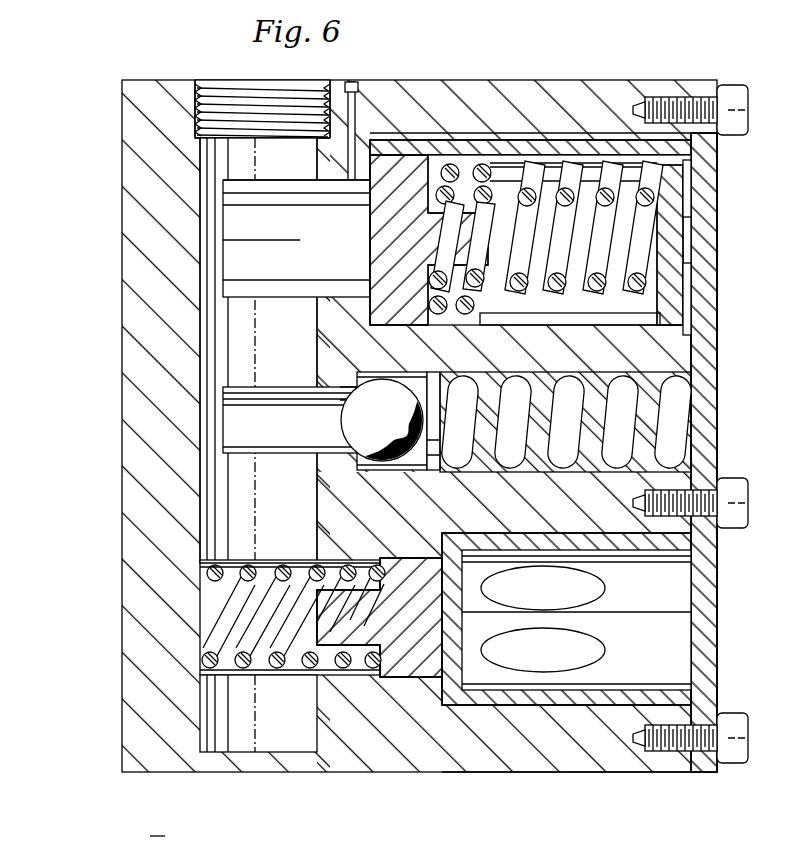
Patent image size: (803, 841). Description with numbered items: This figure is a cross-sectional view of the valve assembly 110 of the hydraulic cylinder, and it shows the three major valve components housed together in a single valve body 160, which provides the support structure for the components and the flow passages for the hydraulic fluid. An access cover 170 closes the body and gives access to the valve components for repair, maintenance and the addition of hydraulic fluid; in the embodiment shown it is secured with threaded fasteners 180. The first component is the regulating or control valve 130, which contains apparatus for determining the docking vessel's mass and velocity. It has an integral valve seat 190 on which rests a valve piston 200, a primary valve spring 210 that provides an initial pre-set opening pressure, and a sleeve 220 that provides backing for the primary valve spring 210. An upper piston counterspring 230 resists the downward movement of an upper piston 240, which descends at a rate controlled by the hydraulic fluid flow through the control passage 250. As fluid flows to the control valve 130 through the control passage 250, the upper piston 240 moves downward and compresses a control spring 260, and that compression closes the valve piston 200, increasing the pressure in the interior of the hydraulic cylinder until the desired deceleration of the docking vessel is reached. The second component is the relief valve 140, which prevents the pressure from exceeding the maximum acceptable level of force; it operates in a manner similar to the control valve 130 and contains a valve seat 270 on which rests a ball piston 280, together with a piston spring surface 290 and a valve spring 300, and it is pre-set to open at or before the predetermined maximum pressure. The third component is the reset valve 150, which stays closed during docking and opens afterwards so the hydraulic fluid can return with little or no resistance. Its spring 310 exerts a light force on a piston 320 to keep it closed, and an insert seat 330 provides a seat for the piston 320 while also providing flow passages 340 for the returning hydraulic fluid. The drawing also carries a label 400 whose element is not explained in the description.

The valve assembly 110 is at (470, 60).
The control valve 130 is at (221, 238).
The relief valve 140 is at (318, 420).
The reset valve 150 is at (262, 678).
The valve body 160 is at (582, 772).
The access cover 170 is at (700, 782).
The threaded fasteners 180 is at (700, 488).
The valve seat 190 is at (364, 183).
The valve piston 200 is at (370, 280).
The primary valve spring 210 is at (497, 160).
The sleeve 220 is at (542, 165).
The upper piston counterspring 230 is at (608, 165).
The upper piston 240 is at (675, 268).
The control passage 250 is at (358, 135).
The control spring 260 is at (670, 300).
The valve seat 270 is at (355, 390).
The ball piston 280 is at (346, 440).
The piston spring surface 290 is at (432, 470).
The valve spring 300 is at (675, 400).
The spring 310 is at (232, 556).
The piston 320 is at (308, 640).
The insert seat 330 is at (448, 643).
The flow passages 340 is at (585, 648).
The tool 400 is at (172, 838).